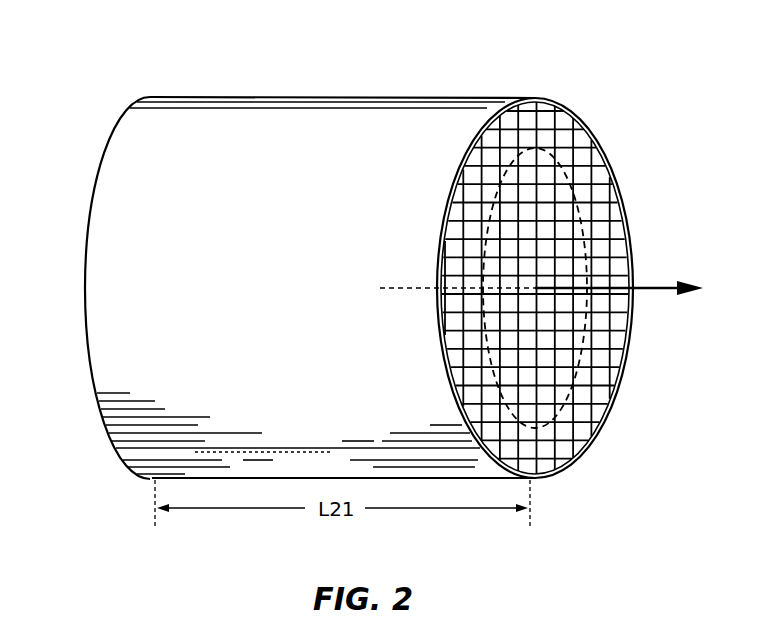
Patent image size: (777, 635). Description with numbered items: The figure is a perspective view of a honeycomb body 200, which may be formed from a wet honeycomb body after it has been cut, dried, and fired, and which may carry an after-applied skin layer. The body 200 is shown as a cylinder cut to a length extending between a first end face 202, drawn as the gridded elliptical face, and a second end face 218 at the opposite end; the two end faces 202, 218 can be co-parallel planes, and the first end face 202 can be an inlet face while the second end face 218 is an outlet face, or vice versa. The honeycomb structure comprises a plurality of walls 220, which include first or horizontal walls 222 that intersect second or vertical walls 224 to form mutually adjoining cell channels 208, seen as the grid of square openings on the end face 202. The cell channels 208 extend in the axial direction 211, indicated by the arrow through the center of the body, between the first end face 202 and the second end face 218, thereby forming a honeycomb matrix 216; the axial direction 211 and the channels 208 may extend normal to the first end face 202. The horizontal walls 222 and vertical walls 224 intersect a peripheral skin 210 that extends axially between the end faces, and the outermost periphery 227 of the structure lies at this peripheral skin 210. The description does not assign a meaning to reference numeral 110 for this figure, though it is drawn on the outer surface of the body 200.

The honeycomb body 200 is at (377, 257).
The housing 110 is at (286, 267).
The second end face 218 is at (110, 135).
The peripheral skin 210 is at (253, 126).
The outermost periphery 227 is at (480, 97).
The first end face 202 is at (614, 153).
The horizontal walls 222 is at (600, 213).
The vertical walls 224 is at (593, 242).
The cell channels 208 is at (600, 370).
The walls 220 is at (597, 388).
The honeycomb matrix 216 is at (546, 458).
The axial direction 211 is at (663, 292).